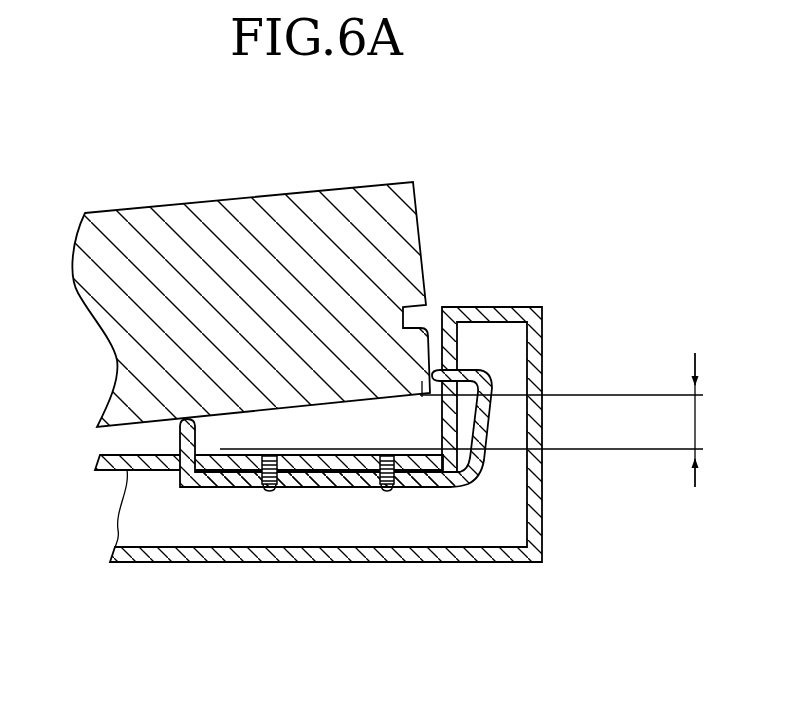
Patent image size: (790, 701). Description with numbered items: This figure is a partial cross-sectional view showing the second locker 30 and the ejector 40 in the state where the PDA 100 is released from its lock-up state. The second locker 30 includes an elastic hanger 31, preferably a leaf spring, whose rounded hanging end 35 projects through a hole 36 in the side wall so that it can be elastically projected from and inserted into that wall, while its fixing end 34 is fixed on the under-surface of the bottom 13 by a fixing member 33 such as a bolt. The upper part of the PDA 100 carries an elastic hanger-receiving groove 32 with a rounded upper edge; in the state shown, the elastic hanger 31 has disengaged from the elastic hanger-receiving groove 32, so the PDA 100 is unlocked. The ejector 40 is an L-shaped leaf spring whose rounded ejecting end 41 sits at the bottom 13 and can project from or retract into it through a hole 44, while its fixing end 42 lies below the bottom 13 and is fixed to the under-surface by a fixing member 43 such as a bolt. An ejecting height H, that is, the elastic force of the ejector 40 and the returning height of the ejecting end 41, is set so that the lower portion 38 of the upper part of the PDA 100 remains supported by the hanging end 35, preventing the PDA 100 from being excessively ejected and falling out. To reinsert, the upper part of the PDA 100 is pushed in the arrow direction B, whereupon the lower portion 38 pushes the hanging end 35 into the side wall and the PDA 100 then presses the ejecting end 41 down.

The PDA 100 is at (390, 257).
The arrow direction B is at (313, 87).
The bottom 13 is at (343, 472).
The second locker 30 is at (449, 504).
The elastic hanger 31 is at (542, 485).
The elastic hanger-receiving groove 32 is at (445, 307).
The fixing member 33 is at (453, 490).
The fixing end 34 is at (372, 478).
The hanging end 35 is at (483, 385).
The hole 36 is at (457, 363).
The lower portion 38 is at (483, 488).
The ejector 40 is at (186, 494).
The ejecting end 41 is at (132, 561).
The fixing end 42 is at (298, 492).
The fixing member 43 is at (268, 492).
The hole 44 is at (113, 470).
The ejecting height H is at (471, 420).